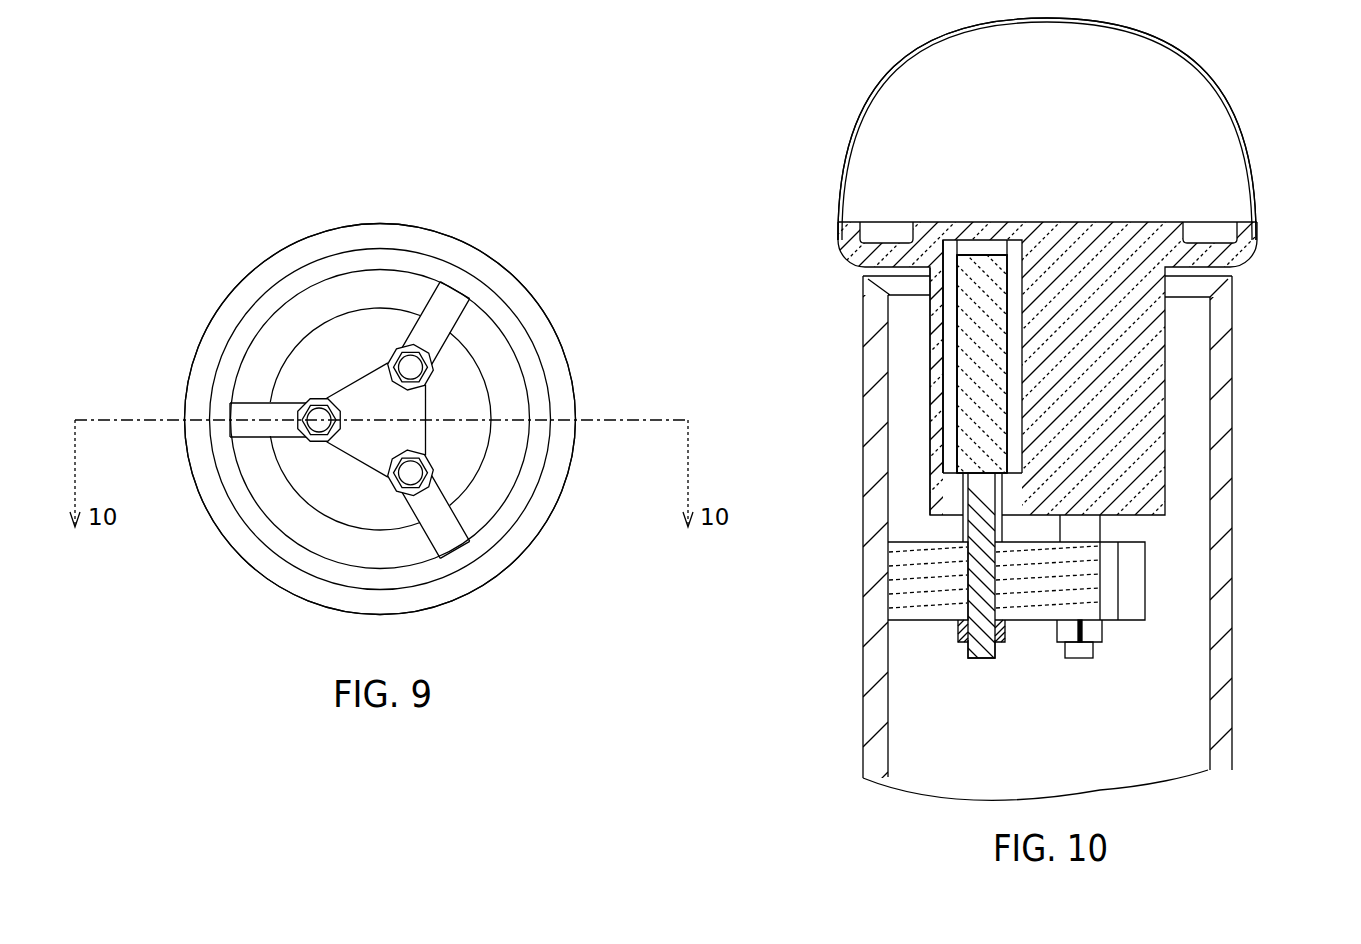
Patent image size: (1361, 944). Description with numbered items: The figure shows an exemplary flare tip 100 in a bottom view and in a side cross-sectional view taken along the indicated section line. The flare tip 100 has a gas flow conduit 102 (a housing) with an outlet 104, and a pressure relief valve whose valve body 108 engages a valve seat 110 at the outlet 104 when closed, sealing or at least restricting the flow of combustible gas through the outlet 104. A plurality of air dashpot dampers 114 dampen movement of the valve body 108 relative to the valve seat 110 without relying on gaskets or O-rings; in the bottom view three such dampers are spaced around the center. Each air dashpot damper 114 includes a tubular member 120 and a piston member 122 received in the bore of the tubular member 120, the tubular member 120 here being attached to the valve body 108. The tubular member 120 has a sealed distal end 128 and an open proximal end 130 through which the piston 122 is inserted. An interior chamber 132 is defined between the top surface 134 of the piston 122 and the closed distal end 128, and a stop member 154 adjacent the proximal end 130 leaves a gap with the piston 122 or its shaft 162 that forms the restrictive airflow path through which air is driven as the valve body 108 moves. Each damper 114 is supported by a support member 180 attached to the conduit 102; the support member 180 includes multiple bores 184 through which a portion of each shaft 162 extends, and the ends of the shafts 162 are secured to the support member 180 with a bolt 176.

In FIG. 9, the flare tip 100 is at (157, 155).
In FIG. 10, the flare tip 100 is at (802, 50).
In FIG. 9, the gas flow conduit 102 is at (500, 268).
In FIG. 10, the gas flow conduit 102 is at (1230, 541).
In FIG. 10, the outlet 104 is at (1210, 280).
In FIG. 10, the valve body 108 is at (1205, 88).
In FIG. 10, the valve seat 110 is at (886, 266).
In FIG. 9, the air dashpot damper 114 is at (390, 338).
In FIG. 10, the air dashpot damper 114 is at (900, 311).
In FIG. 10, the tubular member 120 is at (940, 352).
In FIG. 10, the piston member 122 is at (965, 397).
In FIG. 10, the distal end 128 is at (948, 252).
In FIG. 10, the proximal end 130 is at (935, 504).
In FIG. 10, the interior chamber 132 is at (1007, 247).
In FIG. 10, the top surface 134 is at (977, 257).
In FIG. 10, the stop member 154 is at (918, 454).
In FIG. 9, the shaft 162 is at (413, 362).
In FIG. 10, the shaft 162 is at (982, 658).
In FIG. 9, the bolt 176 is at (434, 369).
In FIG. 10, the bolt 176 is at (958, 637).
In FIG. 9, the support member 180 is at (252, 432).
In FIG. 10, the support member 180 is at (897, 598).
In FIG. 10, the bores 184 is at (967, 582).